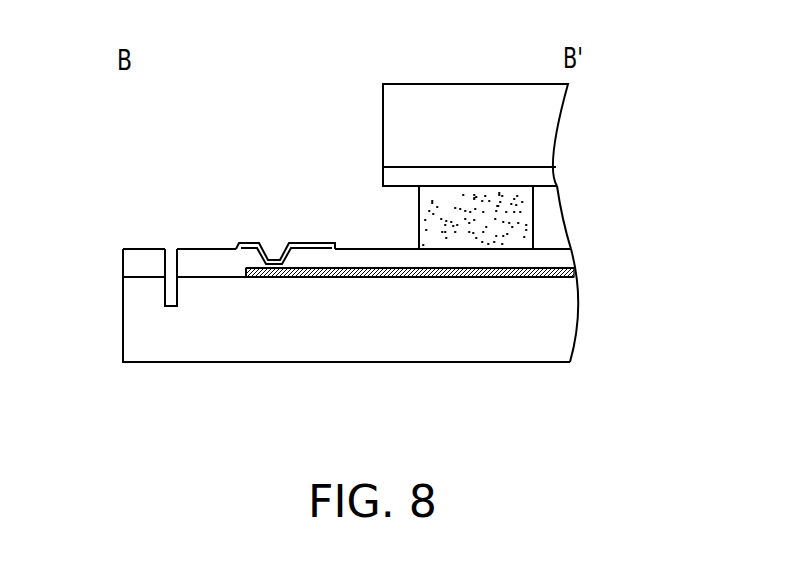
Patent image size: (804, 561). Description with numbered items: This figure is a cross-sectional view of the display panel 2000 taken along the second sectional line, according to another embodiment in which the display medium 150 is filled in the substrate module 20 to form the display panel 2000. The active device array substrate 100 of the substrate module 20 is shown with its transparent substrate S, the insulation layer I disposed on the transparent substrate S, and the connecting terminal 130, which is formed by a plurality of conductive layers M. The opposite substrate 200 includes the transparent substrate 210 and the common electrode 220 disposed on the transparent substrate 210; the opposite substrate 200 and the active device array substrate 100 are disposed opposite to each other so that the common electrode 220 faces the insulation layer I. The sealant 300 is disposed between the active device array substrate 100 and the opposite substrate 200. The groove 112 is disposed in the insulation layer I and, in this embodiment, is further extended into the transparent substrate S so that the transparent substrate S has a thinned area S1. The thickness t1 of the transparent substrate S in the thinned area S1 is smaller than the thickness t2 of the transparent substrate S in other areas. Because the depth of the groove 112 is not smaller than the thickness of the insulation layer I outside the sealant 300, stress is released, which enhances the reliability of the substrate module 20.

The display panel 2000 is at (407, 260).
The substrate module 20 is at (575, 198).
The active device array substrate 100 is at (384, 309).
The groove 112 is at (172, 249).
The connecting terminal 130 is at (295, 195).
The display medium 150 is at (548, 240).
The opposite substrate 200 is at (552, 166).
The transparent substrate 210 is at (544, 108).
The common electrode 220 is at (545, 177).
The sealant 300 is at (515, 215).
The conductive layers M is at (353, 170).
The insulation layer I is at (421, 257).
The transparent substrate S is at (463, 325).
The thickness t1 is at (171, 306).
The thickness t2 is at (225, 277).
The thinned area S1 is at (185, 367).